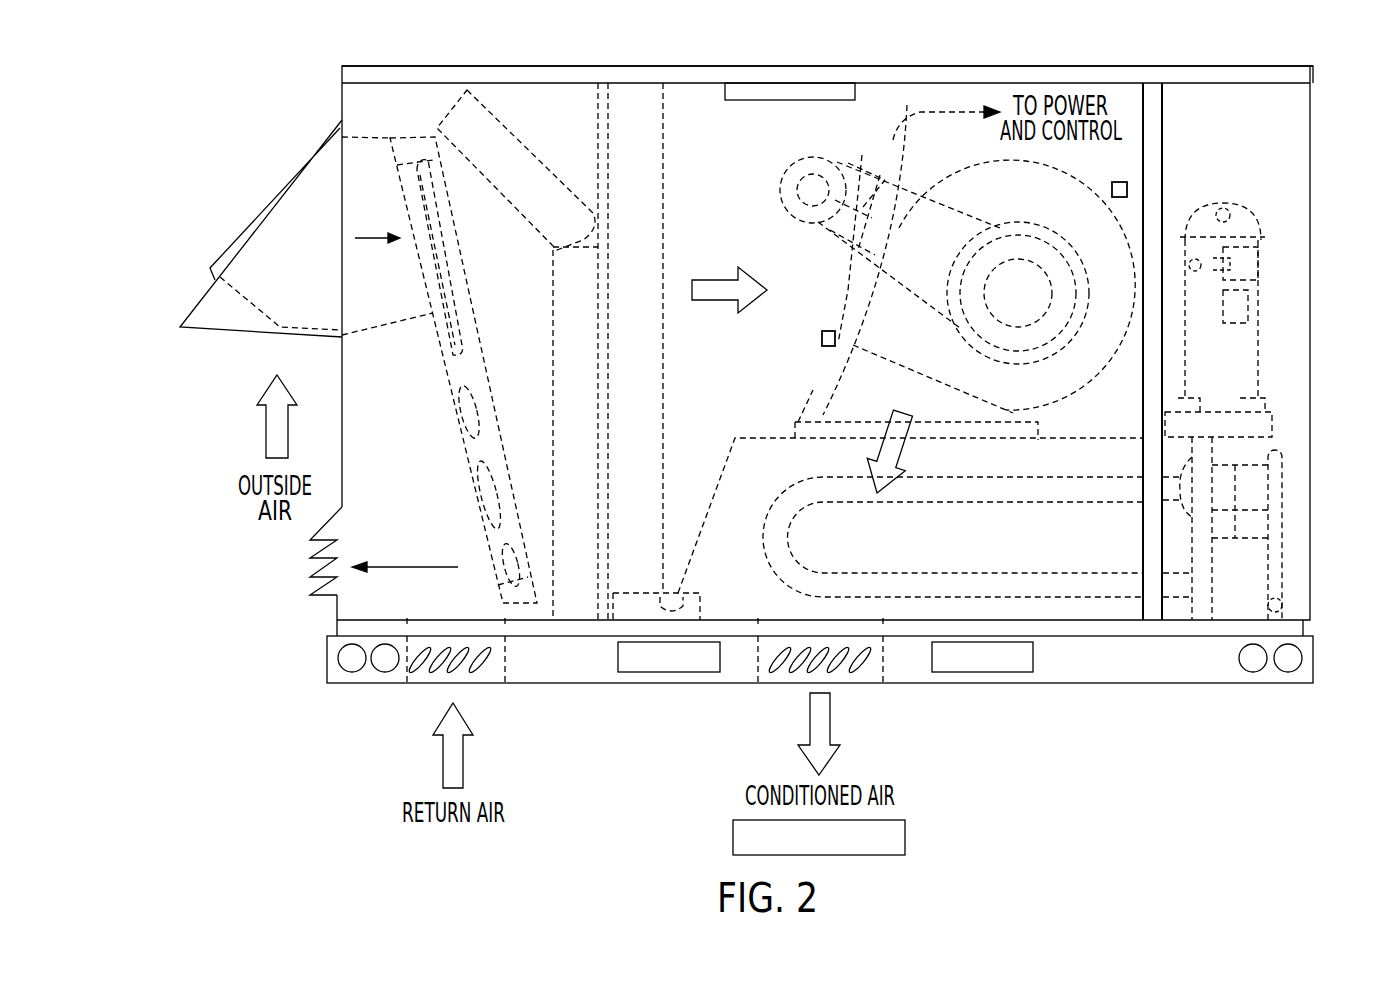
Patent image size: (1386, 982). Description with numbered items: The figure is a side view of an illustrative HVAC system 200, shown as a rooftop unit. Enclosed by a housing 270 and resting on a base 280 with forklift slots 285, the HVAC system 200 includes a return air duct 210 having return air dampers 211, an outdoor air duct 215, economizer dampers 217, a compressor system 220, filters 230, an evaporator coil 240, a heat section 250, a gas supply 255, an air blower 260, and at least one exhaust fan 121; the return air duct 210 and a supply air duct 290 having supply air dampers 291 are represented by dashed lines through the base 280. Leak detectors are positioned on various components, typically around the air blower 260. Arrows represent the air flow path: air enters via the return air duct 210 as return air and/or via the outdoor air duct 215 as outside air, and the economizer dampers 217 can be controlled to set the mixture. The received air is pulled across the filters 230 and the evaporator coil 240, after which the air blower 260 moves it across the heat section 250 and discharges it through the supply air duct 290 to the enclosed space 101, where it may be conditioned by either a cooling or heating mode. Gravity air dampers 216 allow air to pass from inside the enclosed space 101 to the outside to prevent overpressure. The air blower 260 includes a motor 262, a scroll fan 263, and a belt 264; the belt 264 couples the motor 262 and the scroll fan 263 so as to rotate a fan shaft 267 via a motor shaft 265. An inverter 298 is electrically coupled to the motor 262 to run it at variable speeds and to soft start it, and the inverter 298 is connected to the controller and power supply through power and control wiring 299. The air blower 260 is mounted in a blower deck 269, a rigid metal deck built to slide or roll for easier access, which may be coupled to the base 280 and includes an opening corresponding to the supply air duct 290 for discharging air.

The HVAC system 200 is at (304, 128).
The enclosed space 101 is at (910, 838).
The exhaust fan 121 is at (738, 83).
The return air duct 210 is at (455, 693).
The return air dampers 211 is at (481, 670).
The outdoor air duct 215 is at (238, 337).
The gravity air dampers 216 is at (345, 512).
The economizer dampers 217 is at (460, 250).
The compressor system 220 is at (1243, 307).
The filters 230 is at (522, 138).
The evaporator coil 240 is at (650, 188).
The heat section 250 is at (1070, 580).
The gas supply 255 is at (1240, 600).
The air blower 260 is at (884, 98).
The motor 262 is at (860, 235).
The scroll fan 263 is at (961, 213).
The belt 264 is at (820, 240).
The motor shaft 265 is at (781, 205).
The fan shaft 267 is at (1044, 297).
The blower deck 269 is at (813, 394).
The housing 270 is at (1185, 66).
The base 280 is at (326, 670).
The forklift slots 285 is at (668, 672).
The supply air duct 290 is at (822, 692).
The supply air dampers 291 is at (860, 672).
The inverter 298 is at (909, 245).
The power and control wiring 299 is at (905, 142).